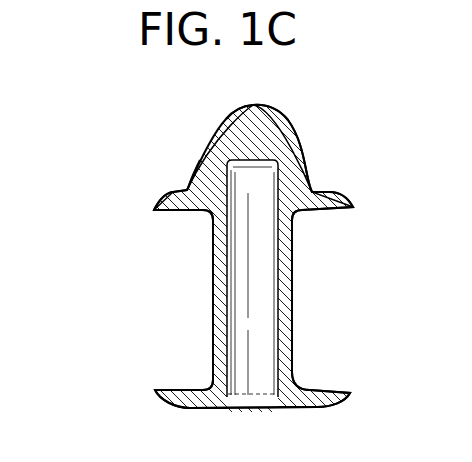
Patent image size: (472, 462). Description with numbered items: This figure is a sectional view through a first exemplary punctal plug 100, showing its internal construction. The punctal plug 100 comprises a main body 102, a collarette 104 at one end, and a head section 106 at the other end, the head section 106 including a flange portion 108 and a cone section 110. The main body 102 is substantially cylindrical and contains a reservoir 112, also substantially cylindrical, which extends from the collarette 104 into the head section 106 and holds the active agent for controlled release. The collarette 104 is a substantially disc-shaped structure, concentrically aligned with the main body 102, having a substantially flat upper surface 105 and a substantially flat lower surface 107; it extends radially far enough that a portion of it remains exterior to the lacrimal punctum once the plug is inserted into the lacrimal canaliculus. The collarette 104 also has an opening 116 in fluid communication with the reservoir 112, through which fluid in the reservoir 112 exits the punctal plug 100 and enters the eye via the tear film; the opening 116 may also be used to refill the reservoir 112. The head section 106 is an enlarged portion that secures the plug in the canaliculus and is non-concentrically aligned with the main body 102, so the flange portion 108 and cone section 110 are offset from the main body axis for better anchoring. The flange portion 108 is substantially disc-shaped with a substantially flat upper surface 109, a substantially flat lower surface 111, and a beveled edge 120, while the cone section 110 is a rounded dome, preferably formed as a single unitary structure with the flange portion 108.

The punctal plug 100 is at (93, 111).
The main body 102 is at (292, 280).
The collarette 104 is at (318, 408).
The upper surface 105 is at (185, 410).
The head section 106 is at (125, 78).
The lower surface 107 is at (183, 390).
The flange portion 108 is at (330, 211).
The upper surface 109 is at (173, 212).
The cone section 110 is at (290, 131).
The lower surface 111 is at (187, 190).
The reservoir 112 is at (255, 302).
The opening 116 is at (252, 409).
The beveled edge 120 is at (167, 193).